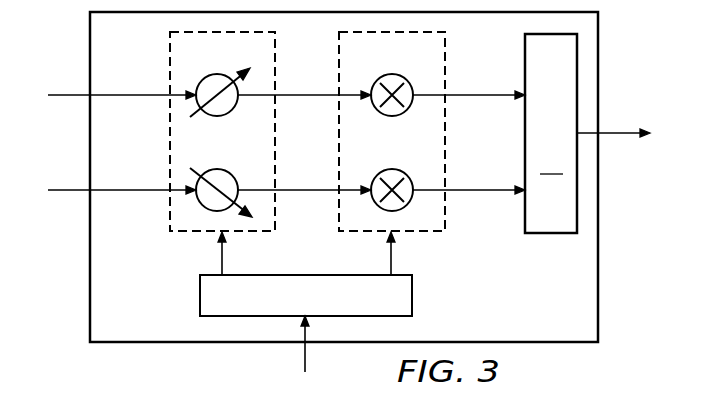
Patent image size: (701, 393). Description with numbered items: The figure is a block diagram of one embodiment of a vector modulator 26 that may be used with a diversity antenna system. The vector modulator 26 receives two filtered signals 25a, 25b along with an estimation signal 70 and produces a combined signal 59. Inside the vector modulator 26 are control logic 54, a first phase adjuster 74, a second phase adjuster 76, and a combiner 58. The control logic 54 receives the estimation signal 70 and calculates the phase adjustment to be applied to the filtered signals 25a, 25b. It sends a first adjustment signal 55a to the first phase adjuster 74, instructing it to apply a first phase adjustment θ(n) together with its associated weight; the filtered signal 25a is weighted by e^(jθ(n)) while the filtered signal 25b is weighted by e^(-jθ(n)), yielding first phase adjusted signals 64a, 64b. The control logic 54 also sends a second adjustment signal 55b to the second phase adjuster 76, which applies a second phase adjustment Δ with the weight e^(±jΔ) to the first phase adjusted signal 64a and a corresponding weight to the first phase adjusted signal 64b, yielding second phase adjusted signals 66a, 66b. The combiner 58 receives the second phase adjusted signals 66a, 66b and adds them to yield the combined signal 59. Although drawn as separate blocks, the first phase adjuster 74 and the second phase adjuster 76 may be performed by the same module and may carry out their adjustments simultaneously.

The vector modulator 26 is at (606, 203).
The first phase adjuster 74 is at (162, 72).
The second phase adjuster 76 is at (453, 133).
The combiner 58 is at (551, 133).
The control logic 54 is at (200, 296).
The filtered signal 25a is at (66, 93).
The filtered signal 25b is at (67, 192).
The first phase adjusted signal 64a is at (318, 93).
The first phase adjusted signal 64b is at (320, 192).
The second phase adjusted signal 66a is at (474, 93).
The second phase adjusted signal 66b is at (474, 192).
The combined signal 59 is at (618, 131).
The first adjustment signal 55a is at (222, 258).
The second adjustment signal 55b is at (391, 258).
The estimation signal 70 is at (305, 355).